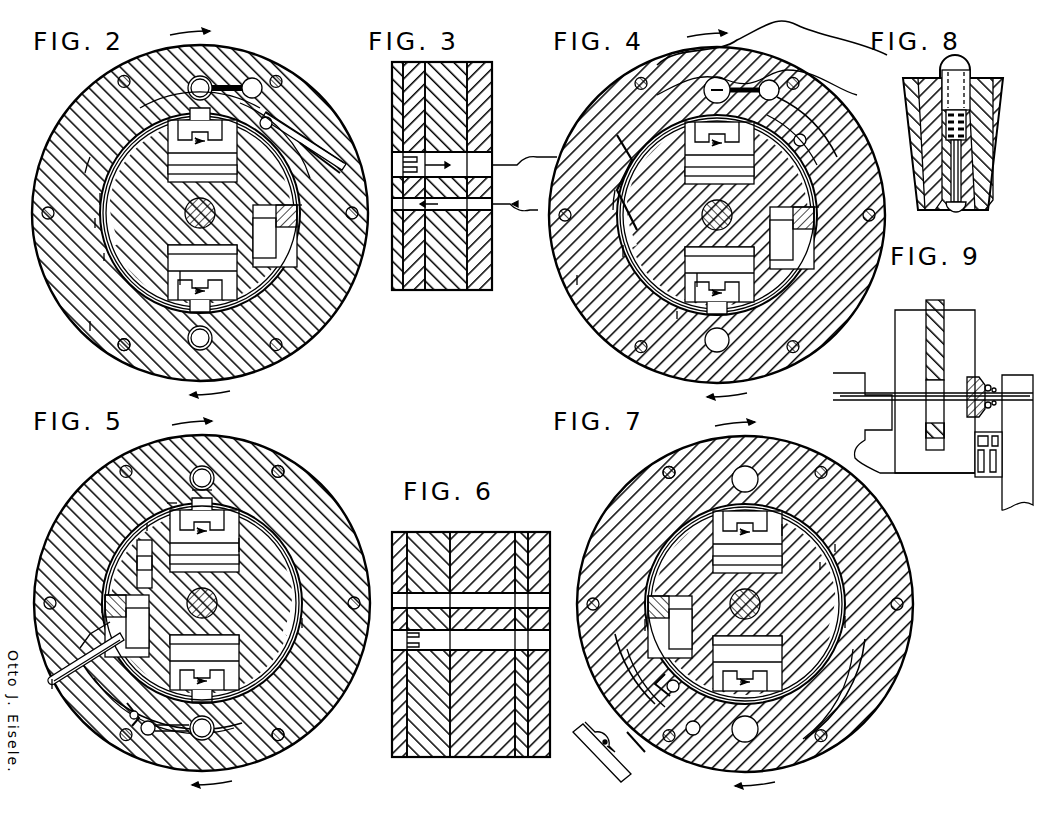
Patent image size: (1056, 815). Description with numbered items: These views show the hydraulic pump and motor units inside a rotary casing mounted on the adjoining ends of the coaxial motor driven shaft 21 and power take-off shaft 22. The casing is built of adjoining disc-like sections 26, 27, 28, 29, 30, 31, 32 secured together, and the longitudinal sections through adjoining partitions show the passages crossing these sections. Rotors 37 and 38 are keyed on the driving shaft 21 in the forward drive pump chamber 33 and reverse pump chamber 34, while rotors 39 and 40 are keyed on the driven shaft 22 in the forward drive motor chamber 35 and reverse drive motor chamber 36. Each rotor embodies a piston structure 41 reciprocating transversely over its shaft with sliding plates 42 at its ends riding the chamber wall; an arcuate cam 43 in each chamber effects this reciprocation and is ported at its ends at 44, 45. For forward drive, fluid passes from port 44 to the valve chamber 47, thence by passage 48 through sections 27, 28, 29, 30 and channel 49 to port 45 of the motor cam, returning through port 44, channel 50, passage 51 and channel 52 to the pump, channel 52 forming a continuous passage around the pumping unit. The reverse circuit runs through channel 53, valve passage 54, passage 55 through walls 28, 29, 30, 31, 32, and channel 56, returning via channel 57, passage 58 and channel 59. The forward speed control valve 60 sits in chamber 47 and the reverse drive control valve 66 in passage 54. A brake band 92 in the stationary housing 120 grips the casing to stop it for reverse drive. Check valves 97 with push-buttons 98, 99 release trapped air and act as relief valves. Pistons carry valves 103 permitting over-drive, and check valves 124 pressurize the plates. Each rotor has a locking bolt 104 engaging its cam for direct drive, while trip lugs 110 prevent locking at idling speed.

In FIG. 2, the motor driven shaft 21 is at (176, 213).
In FIG. 5, the motor driven shaft 21 is at (220, 603).
In FIG. 4, the power take-off shaft 22 is at (695, 215).
In FIG. 7, the power take-off shaft 22 is at (761, 604).
In FIG. 2, the disc-like casing section 26 is at (59, 326).
In FIG. 3, the disc-like casing section 27 is at (389, 288).
In FIG. 3, the disc-like casing section 28 is at (414, 288).
In FIG. 5, the disc-like casing section 28 is at (306, 465).
In FIG. 6, the disc-like casing section 28 is at (400, 532).
In FIG. 3, the disc-like casing section 29 is at (445, 288).
In FIG. 6, the disc-like casing section 29 is at (426, 532).
In FIG. 3, the disc-like casing section 30 is at (476, 288).
In FIG. 4, the disc-like casing section 30 is at (554, 280).
In FIG. 6, the disc-like casing section 30 is at (476, 532).
In FIG. 6, the disc-like casing section 31 is at (520, 532).
In FIG. 6, the disc-like casing section 32 is at (543, 532).
In FIG. 7, the disc-like casing section 32 is at (642, 464).
In FIG. 2, the forward drive pump chamber 33 is at (54, 251).
In FIG. 5, the reverse pump chamber 34 is at (270, 515).
In FIG. 4, the forward drive motor chamber 35 is at (609, 308).
In FIG. 2, the reverse drive motor chamber 36 is at (45, 166).
In FIG. 7, the reverse drive motor chamber 36 is at (899, 547).
In FIG. 2, the rotor 37 is at (50, 221).
In FIG. 5, the rotor 38 is at (81, 528).
In FIG. 4, the rotor 39 is at (568, 246).
In FIG. 7, the rotor 40 is at (882, 566).
In FIG. 2, the piston structure 41 is at (93, 278).
In FIG. 4, the piston structure 41 is at (805, 283).
In FIG. 9, the piston structure 41 is at (933, 410).
In FIG. 5, the piston structure 41 is at (314, 546).
In FIG. 7, the piston structure 41 is at (850, 529).
In FIG. 9, the sliding plate 42 is at (942, 305).
In FIG. 2, the arcuate cam 43 is at (162, 208).
In FIG. 4, the arcuate cam 43 is at (672, 207).
In FIG. 5, the arcuate cam 43 is at (241, 603).
In FIG. 7, the arcuate cam 43 is at (799, 604).
In FIG. 2, the cam port 44 is at (50, 194).
In FIG. 4, the cam port 44 is at (566, 192).
In FIG. 5, the cam port 44 is at (345, 630).
In FIG. 7, the cam port 44 is at (898, 623).
In FIG. 2, the cam port 45 is at (344, 196).
In FIG. 4, the cam port 45 is at (859, 200).
In FIG. 5, the cam port 45 is at (56, 612).
In FIG. 7, the cam port 45 is at (604, 626).
In FIG. 2, the valve chamber 47 is at (120, 88).
In FIG. 5, the valve chamber 47 is at (139, 476).
In FIG. 3, the passage 48 is at (474, 164).
In FIG. 4, the passage 48 is at (775, 77).
In FIG. 7, the passage 48 is at (675, 479).
In FIG. 4, the channel 49 is at (831, 140).
In FIG. 4, the channel 50 is at (717, 62).
In FIG. 2, the passage 51 is at (274, 72).
In FIG. 3, the passage 51 is at (465, 205).
In FIG. 4, the passage 51 is at (799, 86).
In FIG. 2, the channel 52 is at (293, 90).
In FIG. 5, the channel 53 is at (219, 698).
In FIG. 2, the cylindrical valve passage 54 is at (266, 342).
In FIG. 5, the cylindrical valve passage 54 is at (218, 750).
In FIG. 4, the passage 55 is at (640, 340).
In FIG. 6, the passage 55 is at (471, 641).
In FIG. 7, the passage 55 is at (820, 729).
In FIG. 7, the channel 56 is at (864, 689).
In FIG. 7, the channel 57 is at (611, 670).
In FIG. 5, the passage 58 is at (161, 750).
In FIG. 6, the passage 58 is at (471, 601).
In FIG. 7, the passage 58 is at (785, 745).
In FIG. 5, the channel 59 is at (138, 738).
In FIG. 2, the forward speed control valve 60 is at (161, 83).
In FIG. 5, the forward speed control valve 60 is at (127, 488).
In FIG. 2, the reverse drive control valve 66 is at (87, 349).
In FIG. 5, the reverse drive control valve 66 is at (279, 754).
In FIG. 7, the brake band 92 is at (645, 756).
In FIG. 2, the check valve 97 is at (319, 134).
In FIG. 8, the check valve 97 is at (975, 190).
In FIG. 5, the check valve 97 is at (86, 679).
In FIG. 2, the push-button 98 is at (341, 146).
In FIG. 5, the push-button 99 is at (56, 726).
In FIG. 2, the valve 103 is at (105, 210).
In FIG. 4, the valve 103 is at (695, 236).
In FIG. 9, the valve 103 is at (975, 377).
In FIG. 5, the valve 103 is at (282, 620).
In FIG. 2, the locking slide or bolt 104 is at (316, 270).
In FIG. 4, the locking slide or bolt 104 is at (847, 238).
In FIG. 5, the locking slide or bolt 104 is at (76, 598).
In FIG. 7, the locking slide or bolt 104 is at (626, 593).
In FIG. 2, the trip lug 110 is at (309, 121).
In FIG. 4, the trip lug 110 is at (836, 127).
In FIG. 7, the trip lug 110 is at (621, 685).
In FIG. 7, the stationary housing 120 is at (594, 752).
In FIG. 2, the check valve 124 is at (202, 210).
In FIG. 4, the check valve 124 is at (719, 212).
In FIG. 9, the check valve 124 is at (978, 478).
In FIG. 5, the check valve 124 is at (204, 600).
In FIG. 7, the check valve 124 is at (747, 601).